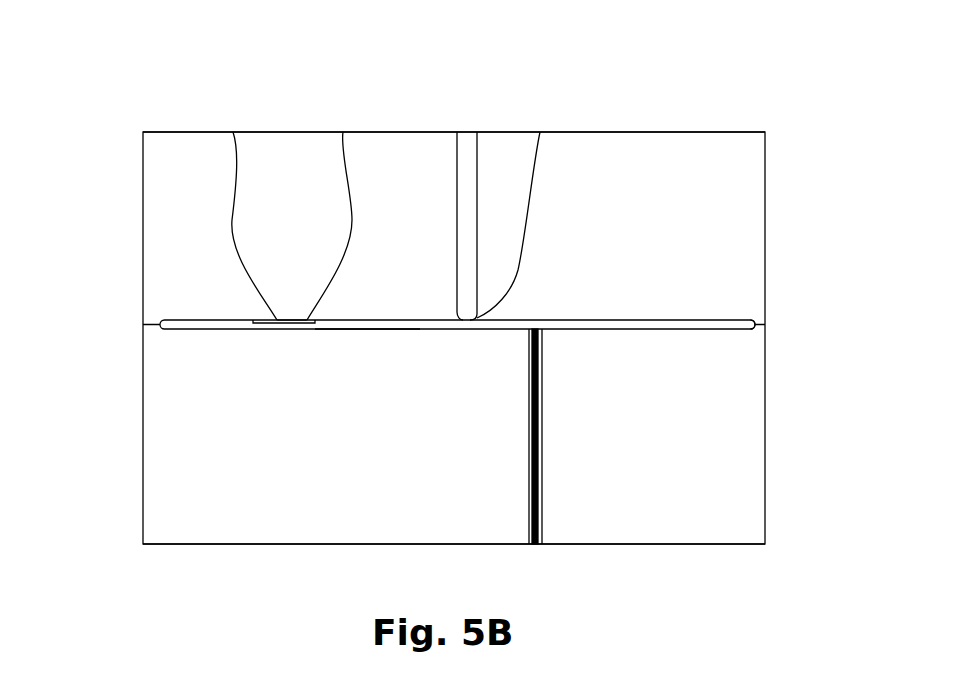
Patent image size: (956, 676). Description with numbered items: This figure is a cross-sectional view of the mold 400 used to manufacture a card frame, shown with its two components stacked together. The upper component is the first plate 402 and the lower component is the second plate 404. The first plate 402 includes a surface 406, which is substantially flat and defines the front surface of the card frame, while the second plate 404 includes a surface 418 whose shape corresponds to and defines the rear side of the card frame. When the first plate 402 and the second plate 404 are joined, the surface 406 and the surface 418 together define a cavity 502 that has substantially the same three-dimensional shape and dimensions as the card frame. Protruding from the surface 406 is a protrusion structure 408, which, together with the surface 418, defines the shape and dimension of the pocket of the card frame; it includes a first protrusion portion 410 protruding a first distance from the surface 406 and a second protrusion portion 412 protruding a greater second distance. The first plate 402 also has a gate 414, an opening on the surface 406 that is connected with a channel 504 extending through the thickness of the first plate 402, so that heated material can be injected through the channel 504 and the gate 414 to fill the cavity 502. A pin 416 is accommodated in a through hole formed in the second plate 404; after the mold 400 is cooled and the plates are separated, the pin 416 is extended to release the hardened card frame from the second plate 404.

The mold 400 is at (134, 64).
The first plate 402 is at (157, 212).
The second plate 404 is at (157, 420).
The surface 406 is at (620, 318).
The protrusion structure 408 is at (292, 308).
The first protrusion portion 410 is at (343, 132).
The second protrusion portion 412 is at (233, 132).
The gate 414 is at (540, 132).
The pin 416 is at (538, 435).
The surface 418 is at (363, 330).
The cavity 502 is at (732, 323).
The channel 504 is at (480, 178).